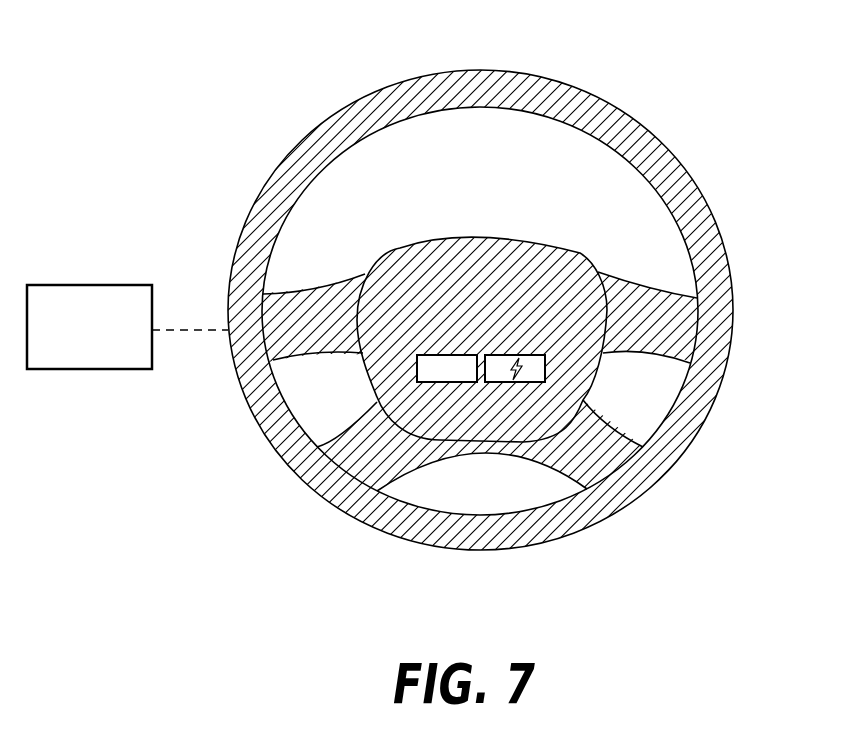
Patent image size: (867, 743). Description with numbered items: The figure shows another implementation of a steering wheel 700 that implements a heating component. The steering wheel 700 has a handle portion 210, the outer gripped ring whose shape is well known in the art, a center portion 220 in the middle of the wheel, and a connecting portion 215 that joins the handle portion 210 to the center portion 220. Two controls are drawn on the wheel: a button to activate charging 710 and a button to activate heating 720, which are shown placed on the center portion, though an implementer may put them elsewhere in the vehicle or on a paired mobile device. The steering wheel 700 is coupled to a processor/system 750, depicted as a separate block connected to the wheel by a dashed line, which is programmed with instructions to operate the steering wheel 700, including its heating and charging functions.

The steering wheel 700 is at (305, 79).
The center portion 220 is at (687, 168).
The handle portion 210 is at (405, 244).
The connecting portion 215 is at (647, 285).
The button to activate charging 710 is at (545, 367).
The button to activate heating 720 is at (440, 382).
The processor/system 750 is at (145, 357).